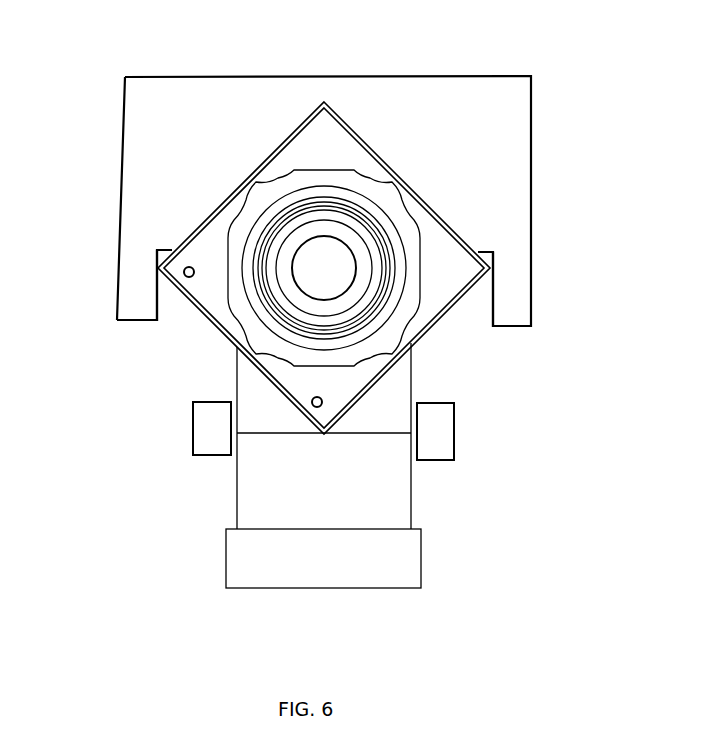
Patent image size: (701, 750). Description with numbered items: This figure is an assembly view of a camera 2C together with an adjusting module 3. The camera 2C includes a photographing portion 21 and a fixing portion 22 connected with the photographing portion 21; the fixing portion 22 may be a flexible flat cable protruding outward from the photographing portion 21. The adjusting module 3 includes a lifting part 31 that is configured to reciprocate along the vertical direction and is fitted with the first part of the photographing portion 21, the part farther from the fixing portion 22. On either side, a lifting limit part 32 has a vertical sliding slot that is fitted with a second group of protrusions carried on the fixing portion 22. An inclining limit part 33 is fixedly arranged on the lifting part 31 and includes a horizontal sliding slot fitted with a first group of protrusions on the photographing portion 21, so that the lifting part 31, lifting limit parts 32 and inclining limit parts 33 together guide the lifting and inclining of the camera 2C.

The adjusting module 3 is at (321, 186).
The lifting part 31 is at (163, 125).
The inclining limit part 33 is at (140, 282).
The lifting limit part 32 is at (216, 430).
The photographing portion 21 is at (408, 321).
The fixing portion 22 is at (244, 548).
The camera 2C is at (325, 372).